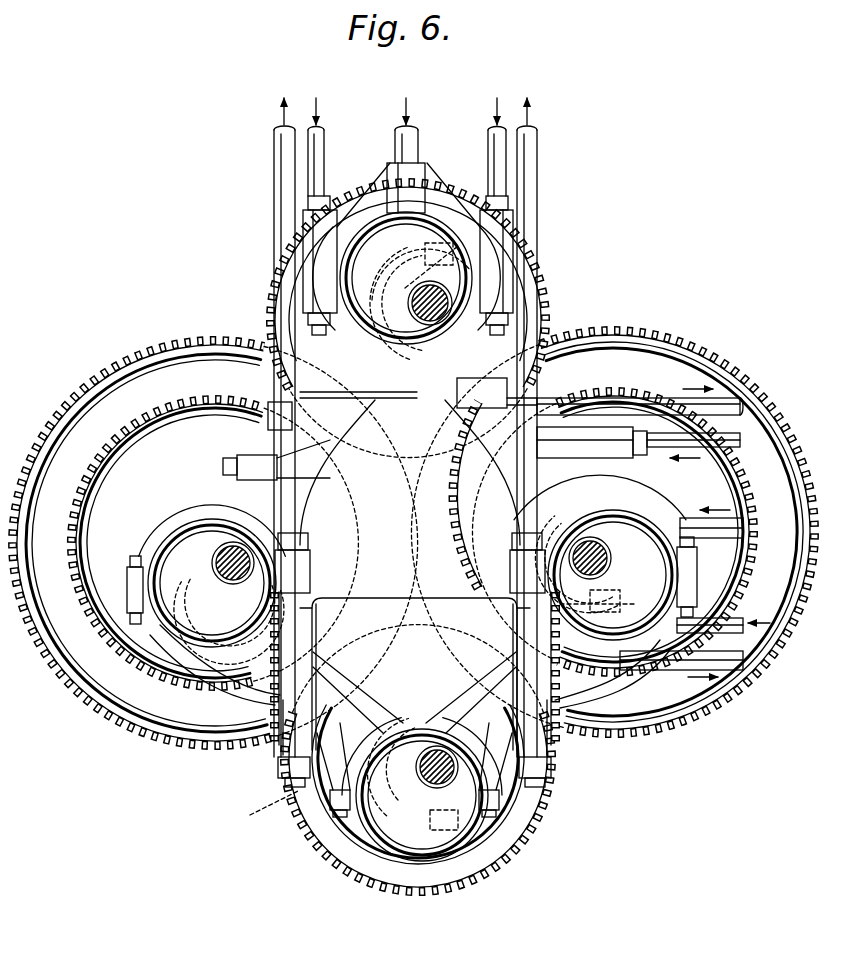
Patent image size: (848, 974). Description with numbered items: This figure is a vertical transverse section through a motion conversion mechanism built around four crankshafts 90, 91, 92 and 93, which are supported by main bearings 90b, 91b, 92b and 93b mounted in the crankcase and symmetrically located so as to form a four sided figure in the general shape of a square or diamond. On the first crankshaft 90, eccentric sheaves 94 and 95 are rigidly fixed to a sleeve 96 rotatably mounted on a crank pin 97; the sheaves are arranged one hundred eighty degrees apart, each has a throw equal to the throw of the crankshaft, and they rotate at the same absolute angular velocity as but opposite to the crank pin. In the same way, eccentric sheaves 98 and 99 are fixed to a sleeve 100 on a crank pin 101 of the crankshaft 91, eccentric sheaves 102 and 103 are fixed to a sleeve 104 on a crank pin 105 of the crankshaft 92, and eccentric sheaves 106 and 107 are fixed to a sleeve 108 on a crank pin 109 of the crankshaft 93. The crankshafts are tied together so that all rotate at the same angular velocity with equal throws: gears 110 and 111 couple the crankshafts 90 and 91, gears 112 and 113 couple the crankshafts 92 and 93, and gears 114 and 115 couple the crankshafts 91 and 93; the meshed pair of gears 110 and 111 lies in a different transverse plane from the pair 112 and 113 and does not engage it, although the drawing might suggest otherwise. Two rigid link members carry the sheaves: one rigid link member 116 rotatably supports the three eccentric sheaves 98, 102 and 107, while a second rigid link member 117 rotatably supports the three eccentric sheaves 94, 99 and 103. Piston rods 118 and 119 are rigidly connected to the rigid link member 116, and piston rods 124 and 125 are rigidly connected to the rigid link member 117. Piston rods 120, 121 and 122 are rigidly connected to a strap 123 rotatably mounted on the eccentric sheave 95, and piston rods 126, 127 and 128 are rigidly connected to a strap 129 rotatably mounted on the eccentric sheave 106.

The crankshaft 90 is at (372, 350).
The main bearing 90b is at (465, 396).
The crankshaft 91 is at (178, 495).
The main bearing 91b is at (172, 500).
The crankshaft 92 is at (300, 830).
The main bearing 92b is at (256, 810).
The crankshaft 93 is at (686, 715).
The main bearing 93b is at (597, 610).
The eccentric sheave 94 is at (512, 332).
The eccentric sheave 95 is at (408, 240).
The sleeve 96 is at (445, 318).
The crank pin 97 is at (406, 278).
The eccentric sheave 98 is at (158, 548).
The eccentric sheave 99 is at (236, 462).
The sleeve 100 is at (232, 585).
The crank pin 101 is at (190, 520).
The eccentric sheave 102 is at (412, 842).
The eccentric sheave 103 is at (414, 707).
The sleeve 104 is at (552, 790).
The crank pin 105 is at (430, 790).
The eccentric sheave 106 is at (592, 442).
The eccentric sheave 107 is at (628, 672).
The sleeve 108 is at (640, 520).
The crank pin 109 is at (615, 545).
The gear 110 is at (272, 296).
The gear 111 is at (188, 345).
The gear 112 is at (470, 880).
The gear 113 is at (748, 470).
The gear 114 is at (72, 692).
The gear 115 is at (780, 652).
The rigid link member 116 is at (183, 658).
The rigid link member 117 is at (300, 348).
The piston rod 118 is at (272, 159).
The piston rod 119 is at (540, 181).
The piston rod 120 is at (325, 158).
The piston rod 121 is at (508, 156).
The piston rod 122 is at (412, 142).
The strap 123 is at (330, 210).
The piston rod 124 is at (643, 397).
The piston rod 125 is at (748, 690).
The piston rod 126 is at (740, 412).
The piston rod 127 is at (711, 536).
The piston rod 128 is at (745, 615).
The strap 129 is at (610, 466).